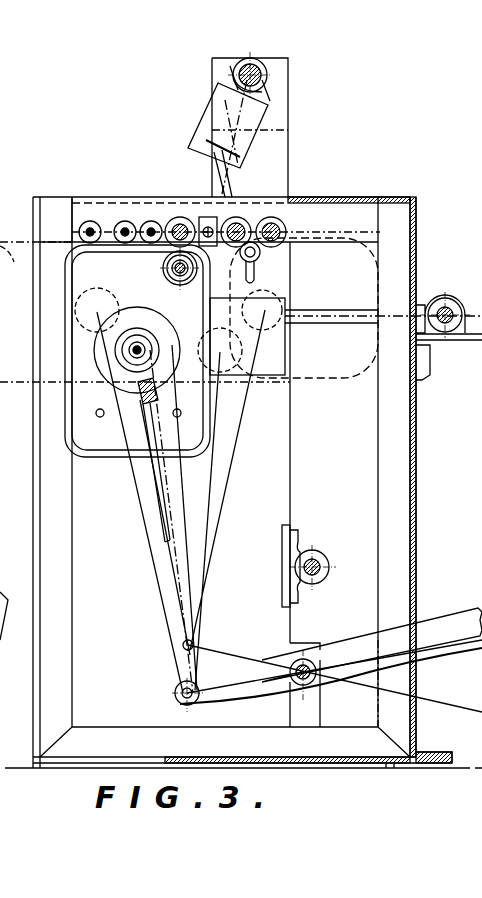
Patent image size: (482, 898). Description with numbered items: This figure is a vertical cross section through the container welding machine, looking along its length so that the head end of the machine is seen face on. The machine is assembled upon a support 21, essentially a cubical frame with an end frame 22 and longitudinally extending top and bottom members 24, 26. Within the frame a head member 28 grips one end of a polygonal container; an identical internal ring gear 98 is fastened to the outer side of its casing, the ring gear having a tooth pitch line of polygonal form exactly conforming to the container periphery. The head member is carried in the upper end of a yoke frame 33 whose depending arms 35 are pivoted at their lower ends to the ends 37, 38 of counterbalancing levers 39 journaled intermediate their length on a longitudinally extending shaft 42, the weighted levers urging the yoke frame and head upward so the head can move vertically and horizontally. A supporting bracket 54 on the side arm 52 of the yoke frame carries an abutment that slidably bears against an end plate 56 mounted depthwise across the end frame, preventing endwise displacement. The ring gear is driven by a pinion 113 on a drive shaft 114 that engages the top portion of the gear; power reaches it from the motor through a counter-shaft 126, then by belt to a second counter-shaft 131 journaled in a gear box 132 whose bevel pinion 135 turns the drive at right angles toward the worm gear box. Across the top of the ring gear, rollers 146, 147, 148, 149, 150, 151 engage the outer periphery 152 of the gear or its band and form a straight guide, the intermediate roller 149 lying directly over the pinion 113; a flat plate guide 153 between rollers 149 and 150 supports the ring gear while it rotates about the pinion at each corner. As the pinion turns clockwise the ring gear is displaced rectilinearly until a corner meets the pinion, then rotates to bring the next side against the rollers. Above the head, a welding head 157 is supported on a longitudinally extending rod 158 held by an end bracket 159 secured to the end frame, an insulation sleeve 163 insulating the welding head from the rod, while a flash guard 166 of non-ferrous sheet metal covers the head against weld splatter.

The support 21 is at (423, 562).
The end frame 22 is at (413, 490).
The top member 24 is at (355, 197).
The bottom member 26 is at (390, 766).
The head member 28 is at (56, 398).
The yoke frame 33 is at (129, 512).
The depending arm 35 is at (170, 640).
The lever end 37 is at (177, 694).
The lever end 38 is at (253, 666).
The counterbalancing lever 39 is at (346, 634).
The shaft 42 is at (318, 672).
The side arm 52 is at (163, 542).
The supporting bracket 54 is at (140, 398).
The end plate 56 is at (285, 363).
The internal ring gear 98 is at (99, 412).
The pinion 113 is at (165, 262).
The drive shaft 114 is at (170, 275).
The counter-shaft 126 is at (320, 560).
The second counter-shaft 131 is at (452, 305).
The gear box 132 is at (471, 350).
The bevel pinion 135 is at (432, 306).
The roller 146 is at (90, 221).
The roller 147 is at (125, 221).
The roller 148 is at (151, 221).
The intermediate roller 149 is at (180, 217).
The roller 150 is at (240, 218).
The roller 151 is at (274, 220).
The outer periphery 152 is at (65, 316).
The flat plate guide 153 is at (210, 226).
The welding head 157 is at (222, 103).
The rod 158 is at (260, 74).
The end bracket 159 is at (290, 122).
The insulation sleeve 163 is at (270, 88).
The flash guard 166 is at (75, 199).